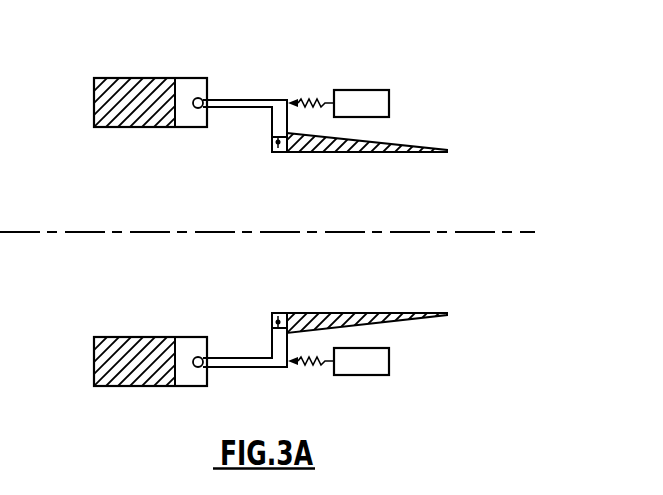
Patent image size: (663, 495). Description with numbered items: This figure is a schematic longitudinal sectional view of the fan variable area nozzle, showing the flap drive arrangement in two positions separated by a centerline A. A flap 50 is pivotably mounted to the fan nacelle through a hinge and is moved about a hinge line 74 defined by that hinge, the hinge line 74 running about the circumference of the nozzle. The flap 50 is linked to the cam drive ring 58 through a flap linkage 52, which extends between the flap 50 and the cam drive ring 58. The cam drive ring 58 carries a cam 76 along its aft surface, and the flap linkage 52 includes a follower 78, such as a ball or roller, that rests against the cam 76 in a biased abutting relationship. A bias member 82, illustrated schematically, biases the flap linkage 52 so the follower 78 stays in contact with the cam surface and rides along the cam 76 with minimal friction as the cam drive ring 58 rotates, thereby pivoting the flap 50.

The flap 50 is at (357, 139).
The flap linkage 52 is at (248, 98).
The cam drive ring 58 is at (136, 71).
The hinge line 74 is at (278, 153).
The cam 76 is at (193, 88).
The follower 78 is at (198, 110).
The bias member 82 is at (367, 90).
The axis A is at (505, 232).